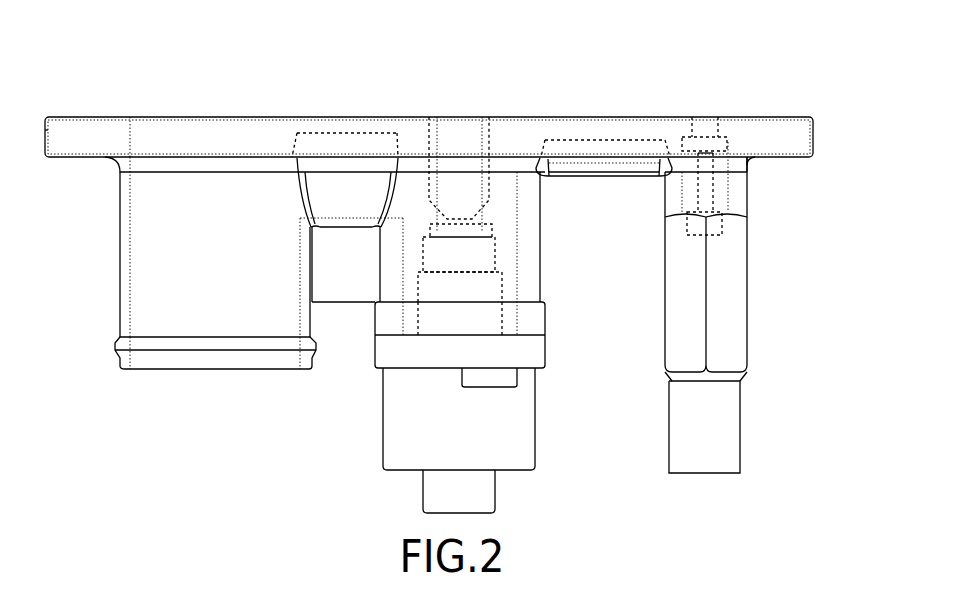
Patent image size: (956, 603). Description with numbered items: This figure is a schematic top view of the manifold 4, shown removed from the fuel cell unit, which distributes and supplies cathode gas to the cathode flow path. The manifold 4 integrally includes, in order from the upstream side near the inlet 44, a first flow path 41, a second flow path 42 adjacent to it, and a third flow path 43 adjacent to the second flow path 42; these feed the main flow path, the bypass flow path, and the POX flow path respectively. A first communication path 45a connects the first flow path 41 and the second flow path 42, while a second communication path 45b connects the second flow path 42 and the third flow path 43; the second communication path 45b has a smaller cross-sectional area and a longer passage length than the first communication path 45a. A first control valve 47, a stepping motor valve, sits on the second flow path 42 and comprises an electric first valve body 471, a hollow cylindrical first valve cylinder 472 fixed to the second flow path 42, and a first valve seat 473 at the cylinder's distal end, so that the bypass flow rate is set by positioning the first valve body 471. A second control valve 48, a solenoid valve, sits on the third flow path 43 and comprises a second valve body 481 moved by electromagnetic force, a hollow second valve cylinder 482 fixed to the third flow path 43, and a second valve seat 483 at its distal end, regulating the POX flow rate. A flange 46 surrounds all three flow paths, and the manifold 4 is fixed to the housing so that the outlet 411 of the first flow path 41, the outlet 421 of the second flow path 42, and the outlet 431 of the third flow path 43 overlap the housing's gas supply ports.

The manifold 4 is at (774, 63).
The first flow path 41 is at (158, 182).
The outlet of the first flow path 411 is at (208, 125).
The second flow path 42 is at (423, 223).
The outlet of the second flow path 421 is at (458, 127).
The third flow path 43 is at (685, 185).
The outlet of the third flow path 431 is at (706, 117).
The inlet 44 is at (198, 369).
The first communication path 45a is at (345, 182).
The second communication path 45b is at (603, 155).
The flange 46 is at (105, 127).
The first control valve 47 is at (497, 237).
The first valve body 471 is at (490, 255).
The first valve cylinder 472 is at (457, 147).
The first valve seat 473 is at (462, 217).
The second control valve 48 is at (731, 151).
The second valve body 481 is at (712, 195).
The second valve cylinder 482 is at (702, 135).
The second valve seat 483 is at (785, 180).